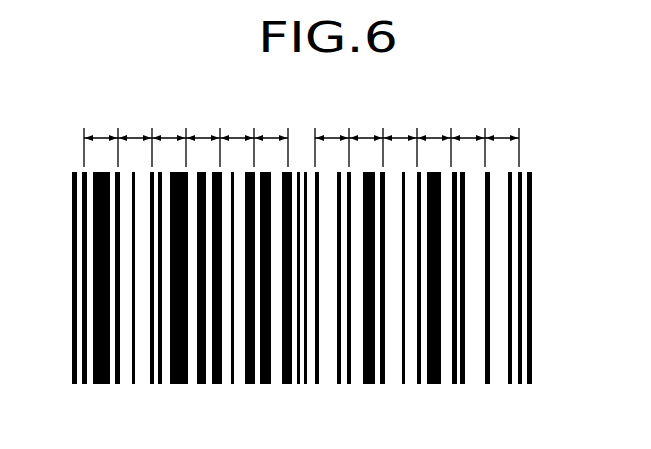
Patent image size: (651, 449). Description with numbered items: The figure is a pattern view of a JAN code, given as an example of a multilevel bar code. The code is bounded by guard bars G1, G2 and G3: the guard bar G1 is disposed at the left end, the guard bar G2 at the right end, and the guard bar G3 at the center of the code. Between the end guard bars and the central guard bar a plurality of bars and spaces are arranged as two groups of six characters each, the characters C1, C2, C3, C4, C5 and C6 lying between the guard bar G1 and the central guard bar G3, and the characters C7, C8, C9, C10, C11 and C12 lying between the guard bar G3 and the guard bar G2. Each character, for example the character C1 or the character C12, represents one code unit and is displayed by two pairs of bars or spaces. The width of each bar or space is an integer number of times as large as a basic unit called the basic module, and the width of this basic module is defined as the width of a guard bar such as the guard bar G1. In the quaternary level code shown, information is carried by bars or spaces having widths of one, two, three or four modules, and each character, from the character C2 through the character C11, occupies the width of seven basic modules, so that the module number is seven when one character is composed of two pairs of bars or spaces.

The character C1 is at (103, 248).
The character C2 is at (137, 248).
The character C3 is at (171, 248).
The character C4 is at (205, 248).
The character C5 is at (239, 248).
The character C6 is at (274, 248).
The character C7 is at (333, 248).
The character C8 is at (368, 248).
The character C9 is at (403, 248).
The character C10 is at (435, 248).
The character C11 is at (468, 248).
The character C12 is at (502, 248).
The guard bar G1 is at (71, 211).
The guard bar G2 is at (532, 214).
The guard bar G3 is at (312, 362).